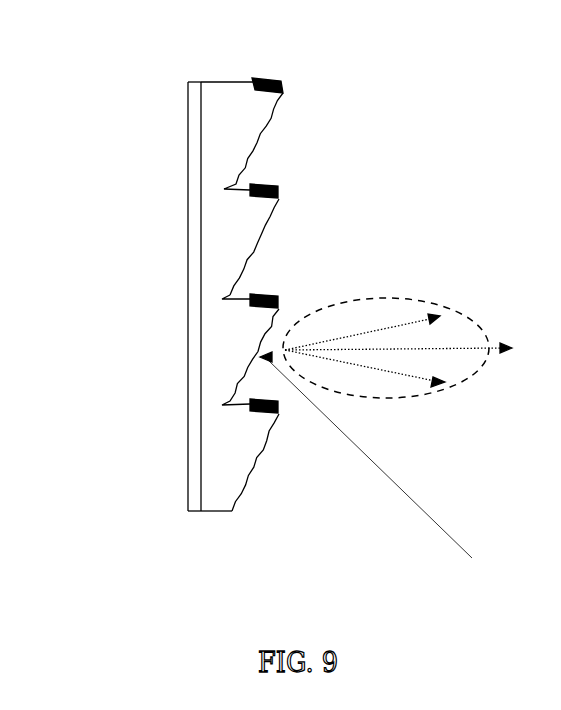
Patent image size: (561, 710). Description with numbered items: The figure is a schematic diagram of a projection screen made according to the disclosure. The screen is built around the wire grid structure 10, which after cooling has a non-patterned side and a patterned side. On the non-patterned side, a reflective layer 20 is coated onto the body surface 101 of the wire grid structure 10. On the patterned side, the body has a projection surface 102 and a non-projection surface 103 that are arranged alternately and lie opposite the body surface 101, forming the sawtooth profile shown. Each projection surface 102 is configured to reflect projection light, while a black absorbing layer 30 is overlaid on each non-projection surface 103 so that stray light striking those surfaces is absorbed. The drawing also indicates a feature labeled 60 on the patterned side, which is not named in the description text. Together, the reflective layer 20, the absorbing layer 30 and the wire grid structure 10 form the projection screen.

The wire grid structure 10 is at (249, 276).
The reflective layer 20 is at (196, 341).
The absorbing layer 30 is at (280, 73).
The inclined surface 60 is at (255, 153).
The body surface 101 is at (201, 251).
The projection surface 102 is at (253, 230).
The non-projection surface 103 is at (250, 280).